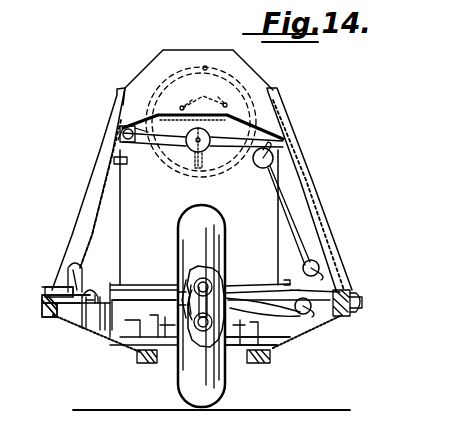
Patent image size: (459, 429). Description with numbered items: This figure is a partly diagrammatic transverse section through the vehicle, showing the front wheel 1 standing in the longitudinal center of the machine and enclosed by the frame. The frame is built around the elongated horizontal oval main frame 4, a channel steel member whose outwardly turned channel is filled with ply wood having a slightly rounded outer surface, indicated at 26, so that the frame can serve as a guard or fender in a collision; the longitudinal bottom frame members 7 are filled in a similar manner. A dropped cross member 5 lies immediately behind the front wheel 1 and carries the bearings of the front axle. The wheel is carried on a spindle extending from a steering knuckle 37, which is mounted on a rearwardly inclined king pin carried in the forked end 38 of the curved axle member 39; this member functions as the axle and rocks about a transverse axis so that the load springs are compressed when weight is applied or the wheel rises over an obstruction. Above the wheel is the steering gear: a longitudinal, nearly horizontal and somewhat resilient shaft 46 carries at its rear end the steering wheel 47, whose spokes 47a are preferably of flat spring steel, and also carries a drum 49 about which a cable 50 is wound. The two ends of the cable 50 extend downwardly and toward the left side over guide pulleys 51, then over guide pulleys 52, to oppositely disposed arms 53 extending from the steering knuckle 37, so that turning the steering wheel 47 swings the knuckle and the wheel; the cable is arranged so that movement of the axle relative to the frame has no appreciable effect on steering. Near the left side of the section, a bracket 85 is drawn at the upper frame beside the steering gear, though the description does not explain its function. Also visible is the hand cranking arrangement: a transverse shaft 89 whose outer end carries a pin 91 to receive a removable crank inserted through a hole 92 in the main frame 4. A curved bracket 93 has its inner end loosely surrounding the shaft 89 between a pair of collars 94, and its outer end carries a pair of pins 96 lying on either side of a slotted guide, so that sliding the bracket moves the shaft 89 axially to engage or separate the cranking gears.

The front wheel 1 is at (201, 306).
The oval main frame member 4 is at (358, 294).
The cross member 5 is at (240, 342).
The longitudinal bottom frame member 7 is at (270, 354).
The ply wood filling 26 is at (362, 303).
The steering knuckle 37 is at (197, 313).
The forked end 38 is at (222, 278).
The curved axle member 39 is at (256, 298).
The steering shaft 46 is at (194, 144).
The steering wheel 47 is at (205, 66).
The spokes 47a is at (203, 95).
The drum 49 is at (200, 152).
The cable 50 is at (298, 197).
The guide pulleys 51 is at (274, 156).
The guide pulleys 52 is at (312, 300).
The arms 53 is at (188, 290).
The bracket 85 is at (128, 132).
The transverse shaft 89 is at (152, 306).
The pin 91 is at (70, 320).
The hole 92 is at (42, 300).
The curved bracket 93 is at (75, 260).
The collars 94 is at (100, 285).
The pins 96 is at (52, 288).